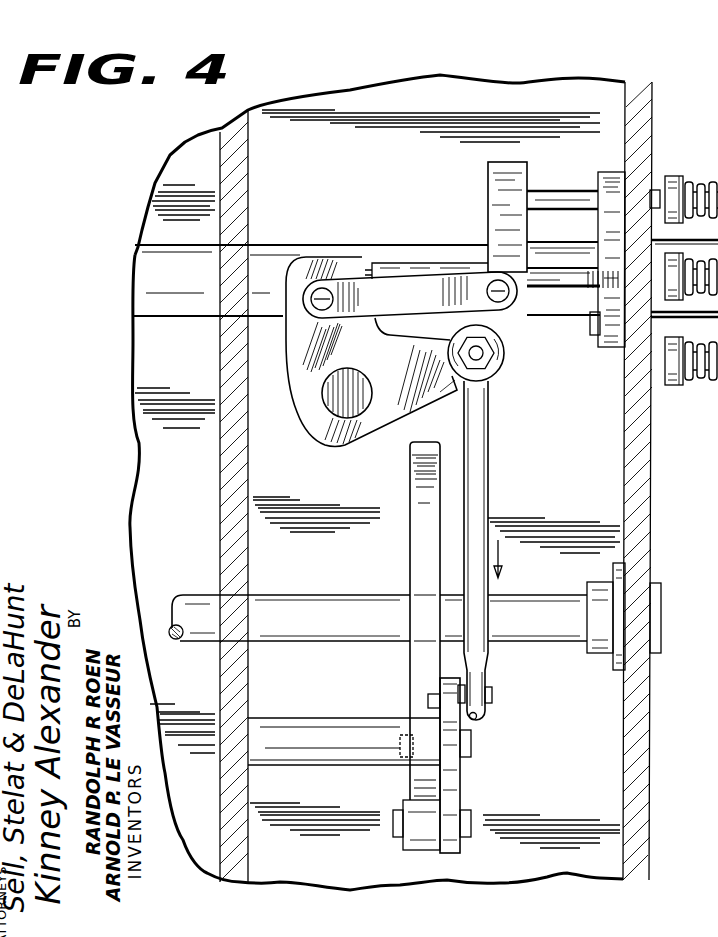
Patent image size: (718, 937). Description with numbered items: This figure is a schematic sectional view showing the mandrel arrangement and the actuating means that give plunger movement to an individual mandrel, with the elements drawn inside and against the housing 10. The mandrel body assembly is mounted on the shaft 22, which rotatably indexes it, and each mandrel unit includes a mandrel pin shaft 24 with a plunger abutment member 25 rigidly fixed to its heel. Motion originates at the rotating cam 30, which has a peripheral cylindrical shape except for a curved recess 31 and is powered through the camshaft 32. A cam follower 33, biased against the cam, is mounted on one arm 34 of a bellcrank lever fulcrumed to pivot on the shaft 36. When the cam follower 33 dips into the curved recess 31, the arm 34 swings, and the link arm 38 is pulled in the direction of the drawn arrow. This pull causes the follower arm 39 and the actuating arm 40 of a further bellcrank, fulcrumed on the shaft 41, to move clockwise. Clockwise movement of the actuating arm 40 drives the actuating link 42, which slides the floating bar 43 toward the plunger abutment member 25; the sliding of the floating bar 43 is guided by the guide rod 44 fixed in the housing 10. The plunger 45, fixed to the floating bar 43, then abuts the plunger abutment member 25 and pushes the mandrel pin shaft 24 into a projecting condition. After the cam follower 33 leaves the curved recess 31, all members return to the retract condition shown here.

The housing 10 is at (643, 493).
The shaft 22 is at (362, 247).
The mandrel pin shaft 24 is at (708, 367).
The plunger abutment member 25 is at (683, 177).
The rotating cam 30 is at (423, 536).
The curved recess 31 is at (412, 473).
The camshaft 32 is at (203, 633).
The cam follower 33 is at (403, 837).
The arm of bellcrank lever 34 is at (460, 785).
The shaft 36 is at (297, 758).
The link arm 38 is at (478, 492).
The follower arm 39 is at (462, 393).
The actuating arm 40 is at (310, 358).
The shaft 41 is at (342, 403).
The actuating link 42 is at (445, 297).
The floating bar 43 is at (502, 177).
The guide rod 44 is at (575, 293).
The plunger 45 is at (553, 193).